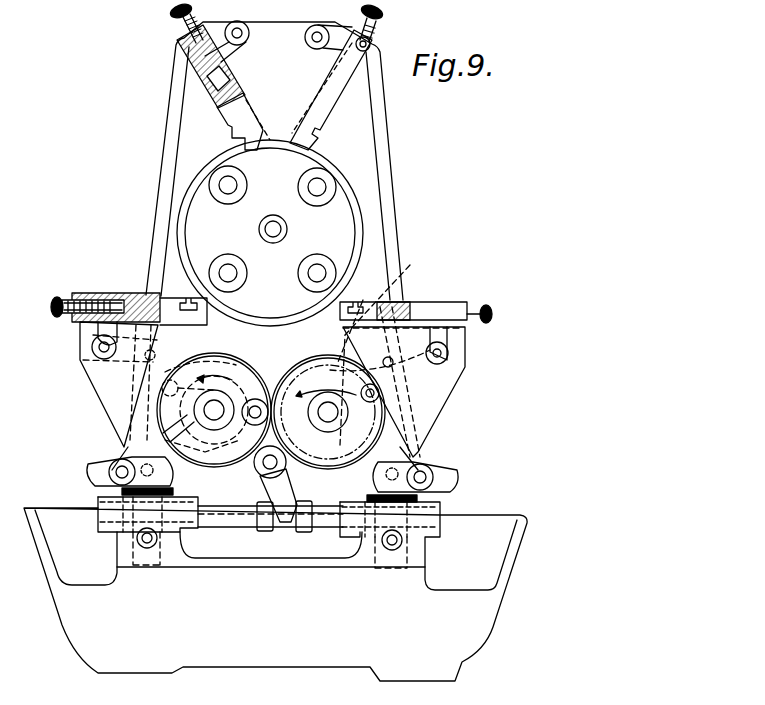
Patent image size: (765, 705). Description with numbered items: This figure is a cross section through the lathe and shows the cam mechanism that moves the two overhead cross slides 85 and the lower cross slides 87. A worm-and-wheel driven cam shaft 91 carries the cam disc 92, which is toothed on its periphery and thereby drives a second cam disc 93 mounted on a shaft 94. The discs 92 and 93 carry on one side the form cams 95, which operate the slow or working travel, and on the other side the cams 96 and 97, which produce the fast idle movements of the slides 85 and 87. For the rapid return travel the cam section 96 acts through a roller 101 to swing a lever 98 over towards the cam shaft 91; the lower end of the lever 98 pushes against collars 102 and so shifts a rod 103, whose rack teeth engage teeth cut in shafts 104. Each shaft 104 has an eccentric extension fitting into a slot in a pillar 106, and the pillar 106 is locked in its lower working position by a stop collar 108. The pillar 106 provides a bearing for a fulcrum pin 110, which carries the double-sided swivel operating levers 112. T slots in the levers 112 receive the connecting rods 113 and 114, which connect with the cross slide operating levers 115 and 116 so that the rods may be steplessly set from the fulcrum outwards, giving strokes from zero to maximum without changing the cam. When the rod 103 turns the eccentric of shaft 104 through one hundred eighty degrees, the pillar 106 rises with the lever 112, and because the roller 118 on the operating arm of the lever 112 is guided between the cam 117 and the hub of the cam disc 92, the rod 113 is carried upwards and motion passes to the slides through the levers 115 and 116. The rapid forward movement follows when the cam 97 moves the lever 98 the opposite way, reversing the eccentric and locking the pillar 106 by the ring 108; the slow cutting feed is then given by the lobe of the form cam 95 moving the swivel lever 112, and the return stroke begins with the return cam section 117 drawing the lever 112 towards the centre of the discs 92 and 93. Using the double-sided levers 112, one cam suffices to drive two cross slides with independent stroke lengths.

The overhead cross slides 85 is at (212, 98).
The lower cross slides 87 is at (448, 310).
The cam shaft 91 is at (325, 410).
The cam disc 92 is at (283, 450).
The cam disc 93 is at (212, 368).
The shaft 94 is at (214, 412).
The cams 95 is at (80, 358).
The cam 96 is at (203, 450).
The cam 97 is at (346, 440).
The lever 98 is at (266, 487).
The roller 101 is at (256, 398).
The collars 102 is at (305, 533).
The rod 103 is at (218, 522).
The shafts 104 is at (132, 530).
The pillar 106 is at (148, 552).
The stop collar 108 is at (120, 492).
The fulcrum pin 110 is at (88, 466).
The operating levers 112 is at (108, 460).
The rod 113 is at (124, 442).
The rod 114 is at (163, 172).
The cross slide operating lever 115 is at (395, 364).
The cross slide operating lever 116 is at (237, 52).
The return cam section 117 is at (391, 345).
The roller 118 is at (380, 396).